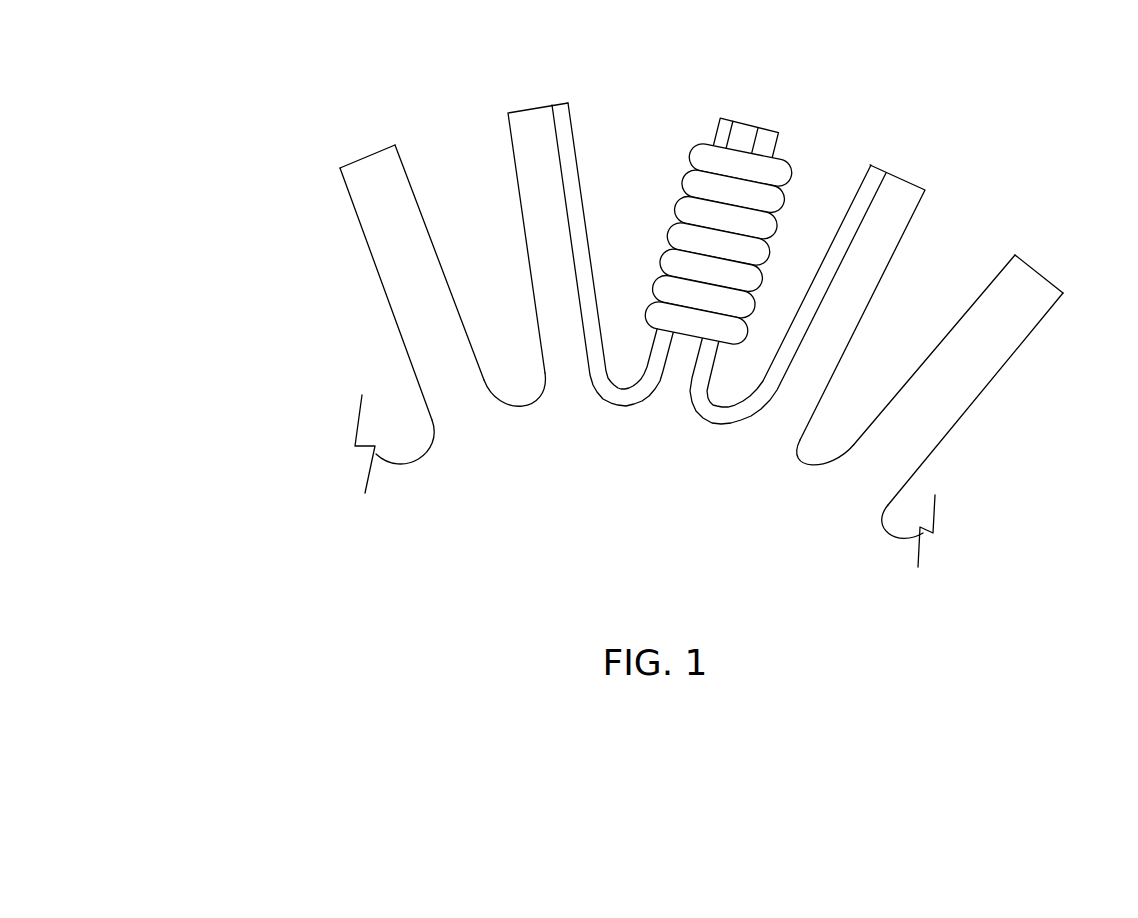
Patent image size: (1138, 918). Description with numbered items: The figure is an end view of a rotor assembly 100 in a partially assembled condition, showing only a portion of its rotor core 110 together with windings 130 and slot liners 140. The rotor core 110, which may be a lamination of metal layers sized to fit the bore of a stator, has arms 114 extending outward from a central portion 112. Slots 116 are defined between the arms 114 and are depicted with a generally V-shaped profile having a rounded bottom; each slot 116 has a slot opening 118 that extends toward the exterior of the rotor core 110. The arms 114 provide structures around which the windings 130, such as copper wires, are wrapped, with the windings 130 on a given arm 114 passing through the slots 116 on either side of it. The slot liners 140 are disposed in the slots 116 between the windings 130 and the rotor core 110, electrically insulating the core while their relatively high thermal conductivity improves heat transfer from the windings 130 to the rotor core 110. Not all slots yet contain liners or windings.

The rotor assembly 100 is at (281, 221).
The rotor core 110 is at (563, 478).
The central portion 112 is at (748, 569).
The arms 114 is at (368, 157).
The slots 116 is at (472, 157).
The slot openings 118 is at (419, 160).
The windings 130 is at (773, 160).
The slot liners 140 is at (557, 105).